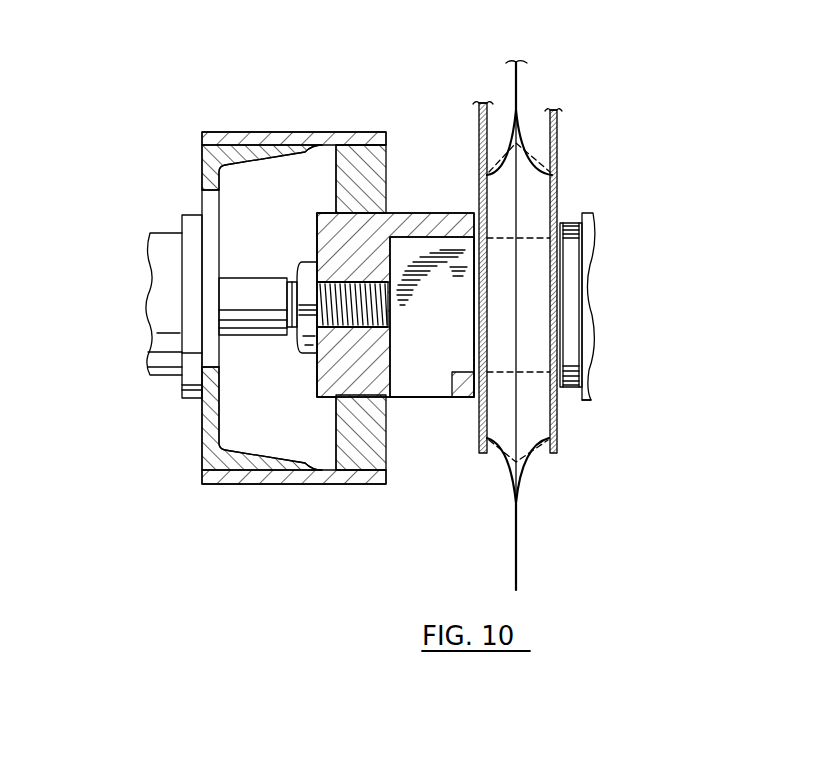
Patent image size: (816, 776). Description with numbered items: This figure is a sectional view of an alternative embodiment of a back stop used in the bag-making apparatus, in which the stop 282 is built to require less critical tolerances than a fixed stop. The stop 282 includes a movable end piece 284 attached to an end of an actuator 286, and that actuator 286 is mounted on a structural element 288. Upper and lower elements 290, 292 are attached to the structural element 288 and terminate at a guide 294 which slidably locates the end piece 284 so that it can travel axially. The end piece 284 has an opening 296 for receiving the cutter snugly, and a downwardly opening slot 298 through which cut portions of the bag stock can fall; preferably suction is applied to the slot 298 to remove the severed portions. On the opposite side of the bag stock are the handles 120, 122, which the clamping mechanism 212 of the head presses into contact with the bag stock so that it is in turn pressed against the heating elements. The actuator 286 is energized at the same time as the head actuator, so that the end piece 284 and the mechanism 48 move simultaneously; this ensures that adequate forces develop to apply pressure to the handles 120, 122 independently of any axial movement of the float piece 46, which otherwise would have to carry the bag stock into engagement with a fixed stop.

The stop 282 is at (339, 488).
The movable end piece 284 is at (406, 222).
The actuator 286 is at (167, 370).
The structural element 288 is at (208, 445).
The upper element 290 is at (322, 132).
The lower element 292 is at (311, 481).
The guide 294 is at (375, 447).
The opening 296 is at (426, 242).
The downwardly opening slot 298 is at (438, 397).
The handle 120 is at (487, 312).
The handle 122 is at (552, 259).
The mechanism 48 is at (590, 308).
The clamping mechanism 212 is at (583, 400).
The float piece 46 is at (532, 463).